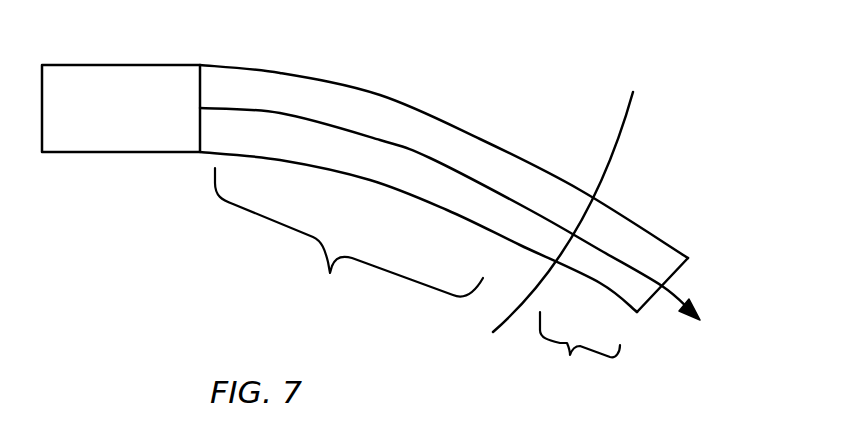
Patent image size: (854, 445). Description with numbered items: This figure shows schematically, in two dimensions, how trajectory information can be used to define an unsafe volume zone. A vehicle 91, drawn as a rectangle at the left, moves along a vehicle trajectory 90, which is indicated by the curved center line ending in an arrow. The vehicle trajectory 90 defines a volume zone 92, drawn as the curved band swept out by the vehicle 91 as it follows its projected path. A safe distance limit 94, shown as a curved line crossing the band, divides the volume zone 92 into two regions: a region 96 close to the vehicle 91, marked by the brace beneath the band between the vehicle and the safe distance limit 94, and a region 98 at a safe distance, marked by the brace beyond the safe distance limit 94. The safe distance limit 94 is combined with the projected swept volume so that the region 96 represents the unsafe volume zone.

The vehicle trajectory 90 is at (430, 158).
The vehicle 91 is at (158, 153).
The volume zone 92 is at (383, 93).
The safe distance limit 94 is at (619, 136).
The region close to the vehicle 96 is at (349, 237).
The region at a safe distance 98 is at (577, 348).